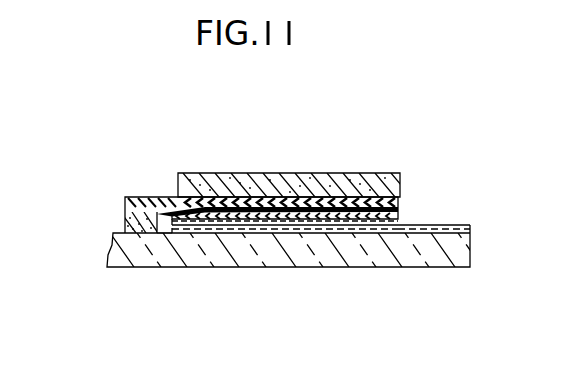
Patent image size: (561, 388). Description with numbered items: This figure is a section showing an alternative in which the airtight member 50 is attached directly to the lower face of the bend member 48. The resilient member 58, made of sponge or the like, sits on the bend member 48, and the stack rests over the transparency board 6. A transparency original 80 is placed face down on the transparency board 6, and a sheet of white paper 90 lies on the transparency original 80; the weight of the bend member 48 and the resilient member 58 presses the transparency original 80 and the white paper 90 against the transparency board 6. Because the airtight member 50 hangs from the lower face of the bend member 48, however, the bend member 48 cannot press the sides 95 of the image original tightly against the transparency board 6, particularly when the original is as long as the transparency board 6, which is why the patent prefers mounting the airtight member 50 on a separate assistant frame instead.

The transparency board 6 is at (403, 250).
The bend member 48 is at (210, 222).
The airtight member 50 is at (127, 235).
The resilient member 58 is at (278, 173).
The transparency original 80 is at (272, 226).
The sheet of white paper 90 is at (339, 228).
The sides of the image original 95 is at (165, 233).